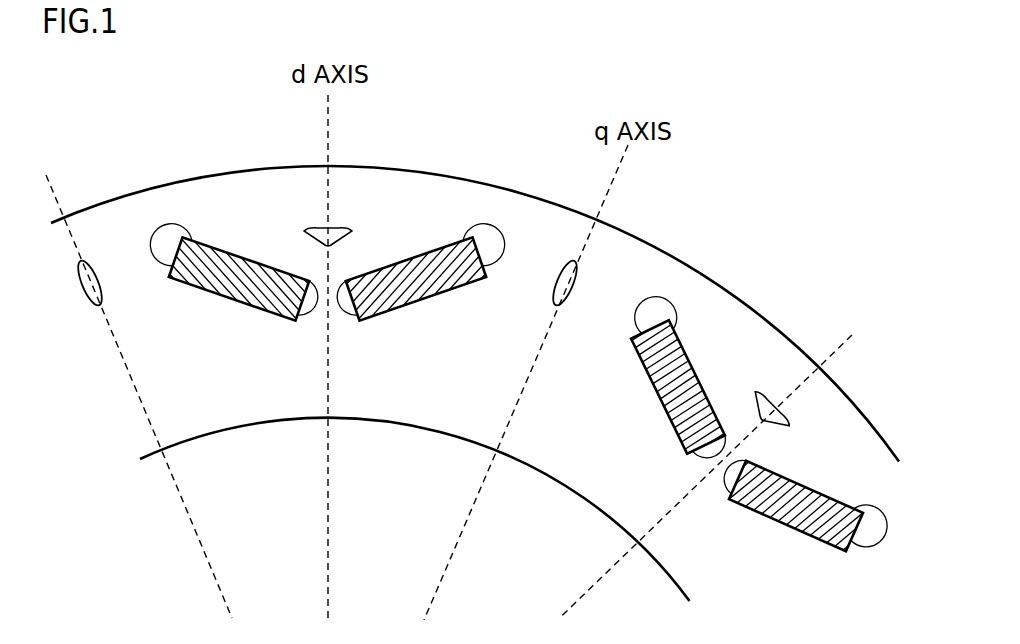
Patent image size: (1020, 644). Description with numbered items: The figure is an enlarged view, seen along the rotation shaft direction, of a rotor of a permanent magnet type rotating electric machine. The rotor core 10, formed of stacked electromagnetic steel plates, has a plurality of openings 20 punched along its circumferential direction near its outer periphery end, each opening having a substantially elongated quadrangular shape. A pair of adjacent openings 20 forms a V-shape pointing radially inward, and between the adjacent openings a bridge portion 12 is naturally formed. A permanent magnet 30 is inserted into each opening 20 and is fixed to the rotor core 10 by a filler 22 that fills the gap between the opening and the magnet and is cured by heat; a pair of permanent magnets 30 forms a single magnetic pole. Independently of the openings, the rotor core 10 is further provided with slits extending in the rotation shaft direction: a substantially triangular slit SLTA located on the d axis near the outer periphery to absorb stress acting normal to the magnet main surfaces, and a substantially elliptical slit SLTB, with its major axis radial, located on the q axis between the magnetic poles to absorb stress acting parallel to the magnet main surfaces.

The rotor core 10 is at (357, 395).
The bridge portion 12 is at (123, 222).
The opening 20 is at (470, 291).
The filler 22 is at (480, 237).
The permanent magnet 30 is at (422, 283).
The slit SLTA is at (334, 232).
The slit SLTB is at (559, 261).